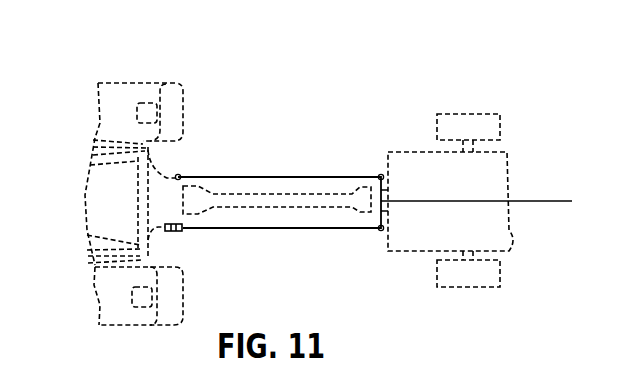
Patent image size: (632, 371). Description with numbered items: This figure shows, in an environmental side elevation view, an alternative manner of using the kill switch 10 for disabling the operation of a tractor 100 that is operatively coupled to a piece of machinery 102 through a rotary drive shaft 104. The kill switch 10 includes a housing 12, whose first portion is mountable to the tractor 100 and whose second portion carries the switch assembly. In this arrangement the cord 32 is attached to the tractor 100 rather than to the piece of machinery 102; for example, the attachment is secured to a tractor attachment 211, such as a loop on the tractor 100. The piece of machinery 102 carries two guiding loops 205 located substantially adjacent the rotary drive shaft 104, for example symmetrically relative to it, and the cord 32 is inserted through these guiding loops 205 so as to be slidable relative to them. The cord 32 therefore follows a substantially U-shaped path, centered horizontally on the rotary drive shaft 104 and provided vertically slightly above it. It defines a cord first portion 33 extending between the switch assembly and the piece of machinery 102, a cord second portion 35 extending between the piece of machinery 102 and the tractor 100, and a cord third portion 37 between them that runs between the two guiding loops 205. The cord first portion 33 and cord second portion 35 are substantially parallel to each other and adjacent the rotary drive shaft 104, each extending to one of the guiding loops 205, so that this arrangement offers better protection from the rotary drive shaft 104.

The tractor 100 is at (97, 82).
The piece of machinery 102 is at (462, 110).
The kill switch 10 is at (269, 167).
The cord second portion 35 is at (243, 176).
The cord 32 is at (309, 171).
The cord first portion 33 is at (220, 229).
The rotary drive shaft 104 is at (305, 208).
The tractor attachment 211 is at (179, 175).
The guiding loop 205 is at (382, 175).
The cord third portion 37 is at (491, 201).
The housing 12 is at (171, 232).